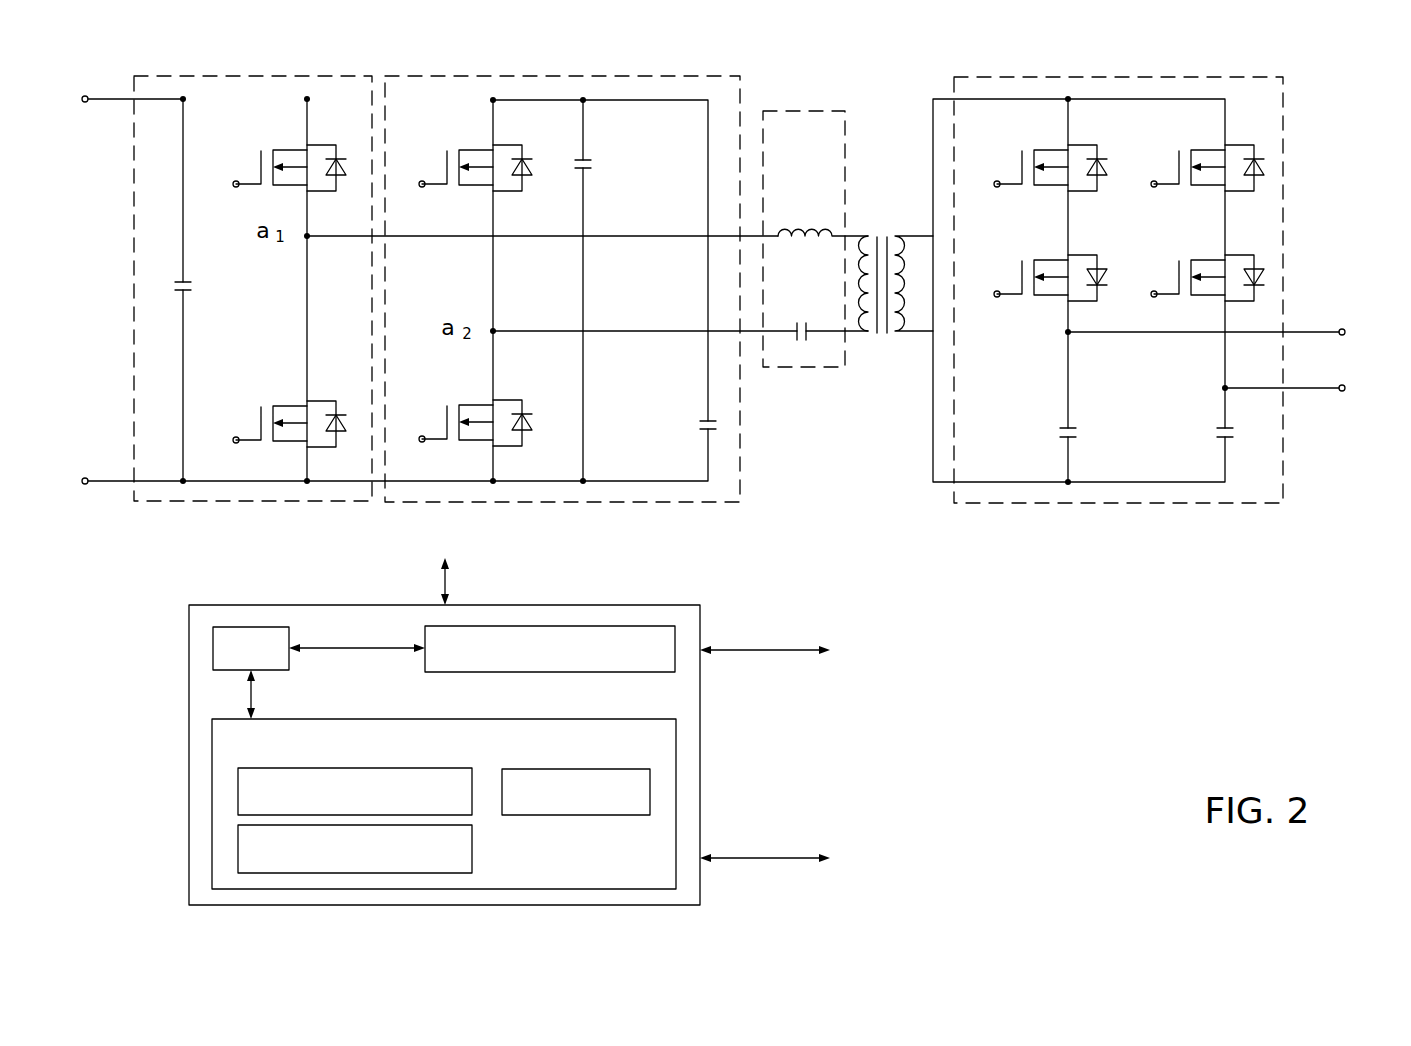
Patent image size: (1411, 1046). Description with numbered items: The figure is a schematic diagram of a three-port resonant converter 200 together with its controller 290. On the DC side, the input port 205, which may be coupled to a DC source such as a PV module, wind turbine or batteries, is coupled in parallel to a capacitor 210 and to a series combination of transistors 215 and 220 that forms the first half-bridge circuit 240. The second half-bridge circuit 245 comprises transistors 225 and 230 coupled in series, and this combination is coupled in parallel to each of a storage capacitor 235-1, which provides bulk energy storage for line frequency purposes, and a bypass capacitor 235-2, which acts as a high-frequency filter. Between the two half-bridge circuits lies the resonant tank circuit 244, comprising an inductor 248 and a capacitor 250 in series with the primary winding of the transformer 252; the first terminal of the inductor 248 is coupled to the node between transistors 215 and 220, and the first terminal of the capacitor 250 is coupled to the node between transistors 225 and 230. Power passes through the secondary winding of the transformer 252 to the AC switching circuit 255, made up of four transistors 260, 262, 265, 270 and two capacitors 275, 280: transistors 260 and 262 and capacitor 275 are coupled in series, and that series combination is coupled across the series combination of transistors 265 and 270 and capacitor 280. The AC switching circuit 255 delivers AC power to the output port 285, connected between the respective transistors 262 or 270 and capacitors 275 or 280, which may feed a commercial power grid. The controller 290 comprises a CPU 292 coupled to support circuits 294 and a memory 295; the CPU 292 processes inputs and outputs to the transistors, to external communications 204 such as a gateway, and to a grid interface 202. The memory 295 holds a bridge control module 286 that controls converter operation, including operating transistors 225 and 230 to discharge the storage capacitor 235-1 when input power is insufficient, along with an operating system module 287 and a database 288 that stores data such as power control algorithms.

The three-port resonant converter 200 is at (898, 49).
The grid interface 202 is at (836, 653).
The external communications 204 is at (879, 858).
The input port 205 is at (183, 290).
The capacitor 210 is at (195, 287).
The transistor 215 is at (252, 167).
The transistor 220 is at (252, 423).
The transistor 225 is at (438, 167).
The transistor 230 is at (438, 422).
The storage capacitor 235-1 is at (595, 165).
The bypass capacitor 235-2 is at (695, 424).
The first half-bridge circuit 240 is at (167, 61).
The resonant tank circuit 244 is at (815, 98).
The second half-bridge circuit 245 is at (532, 61).
The inductor 248 is at (805, 226).
The capacitor 250 is at (800, 318).
The transformer 252 is at (882, 228).
The AC switching circuit 255 is at (1130, 61).
The transistor 260 is at (1013, 167).
The transistor 262 is at (1013, 277).
The transistor 265 is at (1170, 167).
The transistor 270 is at (1170, 277).
The capacitor 275 is at (1055, 434).
The capacitor 280 is at (1213, 434).
The output port 285 is at (1222, 274).
The bridge control module 286 is at (238, 786).
The operating system module 287 is at (238, 842).
The database 288 is at (650, 790).
The controller 290 is at (144, 700).
The CPU 292 is at (248, 627).
The support circuits 294 is at (640, 626).
The memory 295 is at (676, 740).